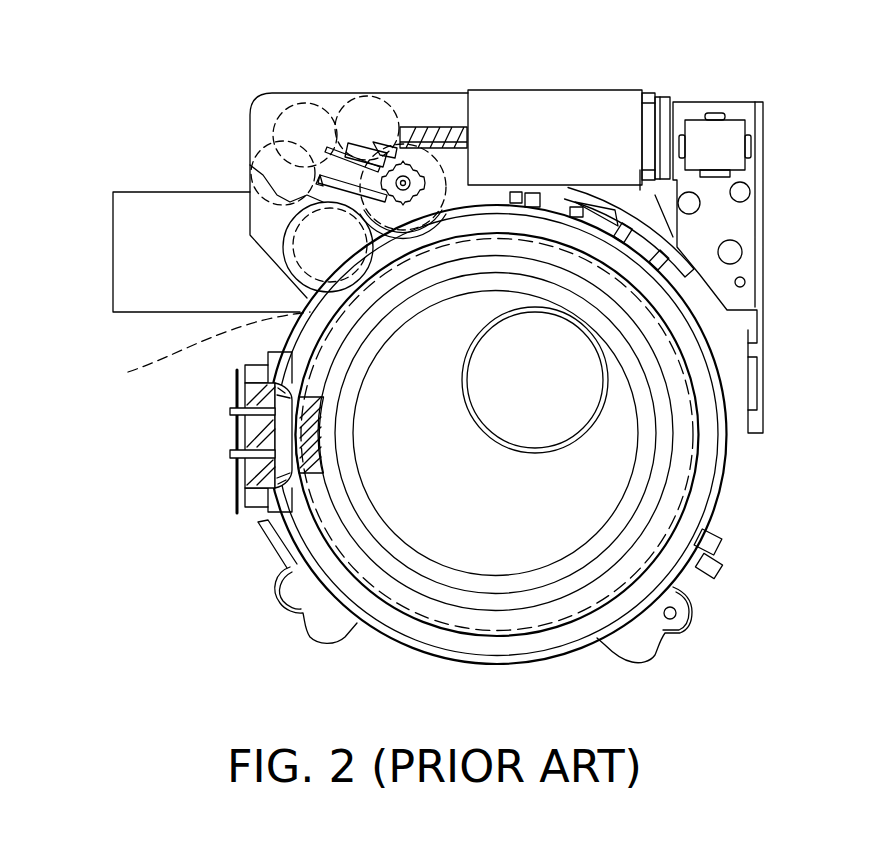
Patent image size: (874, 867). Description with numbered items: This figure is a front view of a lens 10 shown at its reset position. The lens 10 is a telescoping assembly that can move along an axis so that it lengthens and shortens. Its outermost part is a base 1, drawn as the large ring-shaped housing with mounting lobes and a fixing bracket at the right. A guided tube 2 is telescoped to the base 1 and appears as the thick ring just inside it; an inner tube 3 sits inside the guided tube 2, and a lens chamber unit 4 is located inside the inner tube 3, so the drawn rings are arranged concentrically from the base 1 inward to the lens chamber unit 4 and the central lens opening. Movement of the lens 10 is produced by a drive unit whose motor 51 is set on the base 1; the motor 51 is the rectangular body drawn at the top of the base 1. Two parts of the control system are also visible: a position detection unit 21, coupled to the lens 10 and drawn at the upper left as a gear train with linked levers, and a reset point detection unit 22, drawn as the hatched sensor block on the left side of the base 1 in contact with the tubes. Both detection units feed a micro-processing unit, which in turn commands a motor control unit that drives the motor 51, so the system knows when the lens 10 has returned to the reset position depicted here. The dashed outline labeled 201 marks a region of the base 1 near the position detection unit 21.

The base 1 is at (393, 646).
The guided tube 2 is at (447, 637).
The inner tube 3 is at (503, 623).
The lens chamber unit 4 is at (561, 592).
The lens 10 is at (800, 115).
The position detection unit 21 is at (385, 140).
The reset point detection unit 22 is at (228, 440).
The motor 51 is at (562, 123).
The receiving space 201 is at (194, 350).